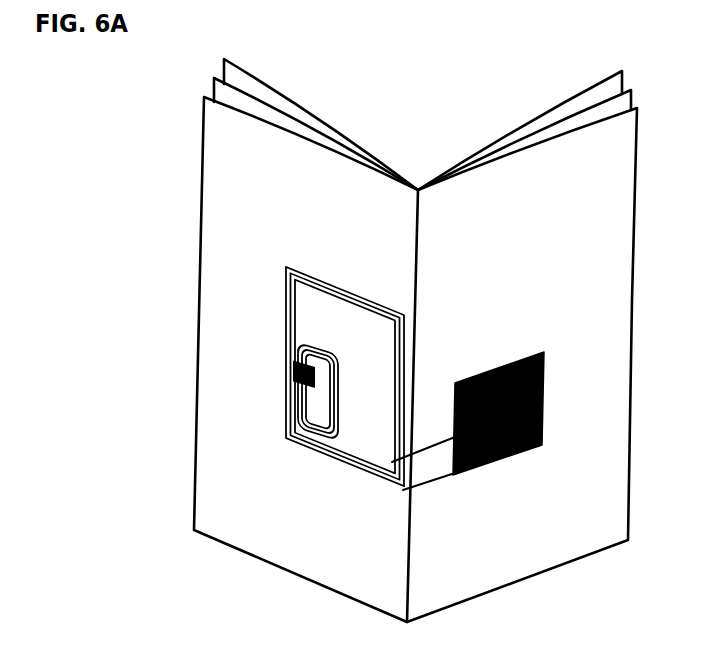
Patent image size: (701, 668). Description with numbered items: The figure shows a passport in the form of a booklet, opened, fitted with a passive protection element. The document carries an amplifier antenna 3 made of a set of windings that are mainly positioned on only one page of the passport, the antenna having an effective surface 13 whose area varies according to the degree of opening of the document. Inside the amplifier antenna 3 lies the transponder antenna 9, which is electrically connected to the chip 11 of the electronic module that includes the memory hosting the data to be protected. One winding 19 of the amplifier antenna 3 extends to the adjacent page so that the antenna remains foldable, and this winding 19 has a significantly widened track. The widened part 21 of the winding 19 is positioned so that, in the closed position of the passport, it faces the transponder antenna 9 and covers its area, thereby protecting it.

The amplifier antenna 3 is at (287, 266).
The effective surface 13 is at (315, 323).
The chip 11 is at (293, 368).
The transponder antenna 9 is at (296, 414).
The winding 19 is at (448, 438).
The widened part 21 is at (544, 352).